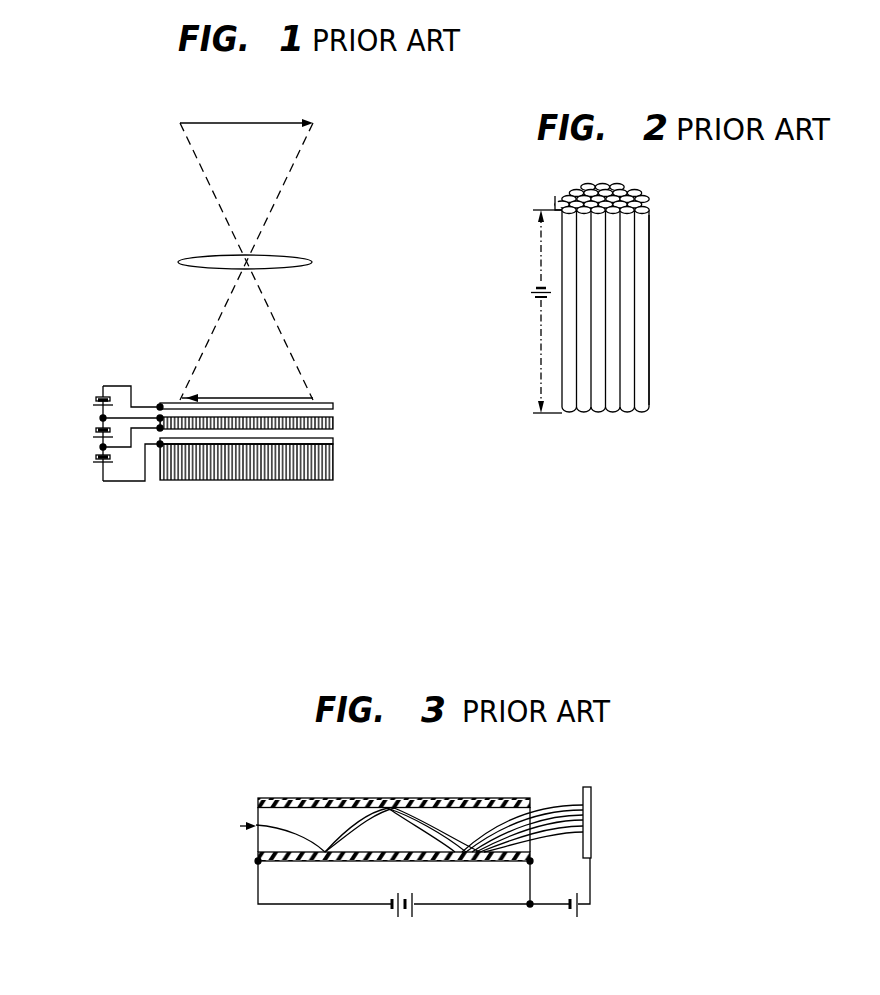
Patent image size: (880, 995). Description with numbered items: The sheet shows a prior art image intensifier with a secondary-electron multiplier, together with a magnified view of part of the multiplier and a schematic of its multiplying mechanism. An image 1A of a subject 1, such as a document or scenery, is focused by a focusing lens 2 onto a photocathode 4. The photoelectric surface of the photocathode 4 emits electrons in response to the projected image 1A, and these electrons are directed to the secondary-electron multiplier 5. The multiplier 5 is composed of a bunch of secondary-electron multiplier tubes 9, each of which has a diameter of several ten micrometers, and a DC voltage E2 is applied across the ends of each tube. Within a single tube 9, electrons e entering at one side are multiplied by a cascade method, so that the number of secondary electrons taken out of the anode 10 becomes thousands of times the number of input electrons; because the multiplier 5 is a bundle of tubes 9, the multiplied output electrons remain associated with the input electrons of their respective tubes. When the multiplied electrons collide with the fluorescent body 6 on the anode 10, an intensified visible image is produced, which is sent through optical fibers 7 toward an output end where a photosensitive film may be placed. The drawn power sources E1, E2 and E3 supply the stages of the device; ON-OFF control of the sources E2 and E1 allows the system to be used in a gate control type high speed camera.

In FIG. 1, the subject 1 is at (266, 122).
In FIG. 1, the focusing lens 2 is at (312, 261).
In FIG. 1, the image 1A is at (237, 398).
In FIG. 1, the photocathode 4 is at (333, 404).
In FIG. 1, the secondary-electron multiplier 5 is at (333, 424).
In FIG. 2, the secondary-electron multiplier 5 is at (652, 290).
In FIG. 1, the fluorescent body 6 is at (333, 437).
In FIG. 1, the anode 10 is at (333, 447).
In FIG. 3, the anode 10 is at (592, 841).
In FIG. 1, the optical fibers 7 is at (333, 480).
In FIG. 2, the secondary-electron multiplier tube 9 is at (645, 390).
In FIG. 3, the secondary-electron multiplier tube 9 is at (458, 797).
In FIG. 3, the electrons e is at (403, 828).
In FIG. 1, the power source E1 is at (92, 407).
In FIG. 1, the DC voltage E2 is at (92, 437).
In FIG. 2, the DC voltage E2 is at (531, 295).
In FIG. 3, the DC voltage E2 is at (403, 919).
In FIG. 1, the voltage source E3 is at (92, 459).
In FIG. 3, the voltage source E3 is at (572, 919).